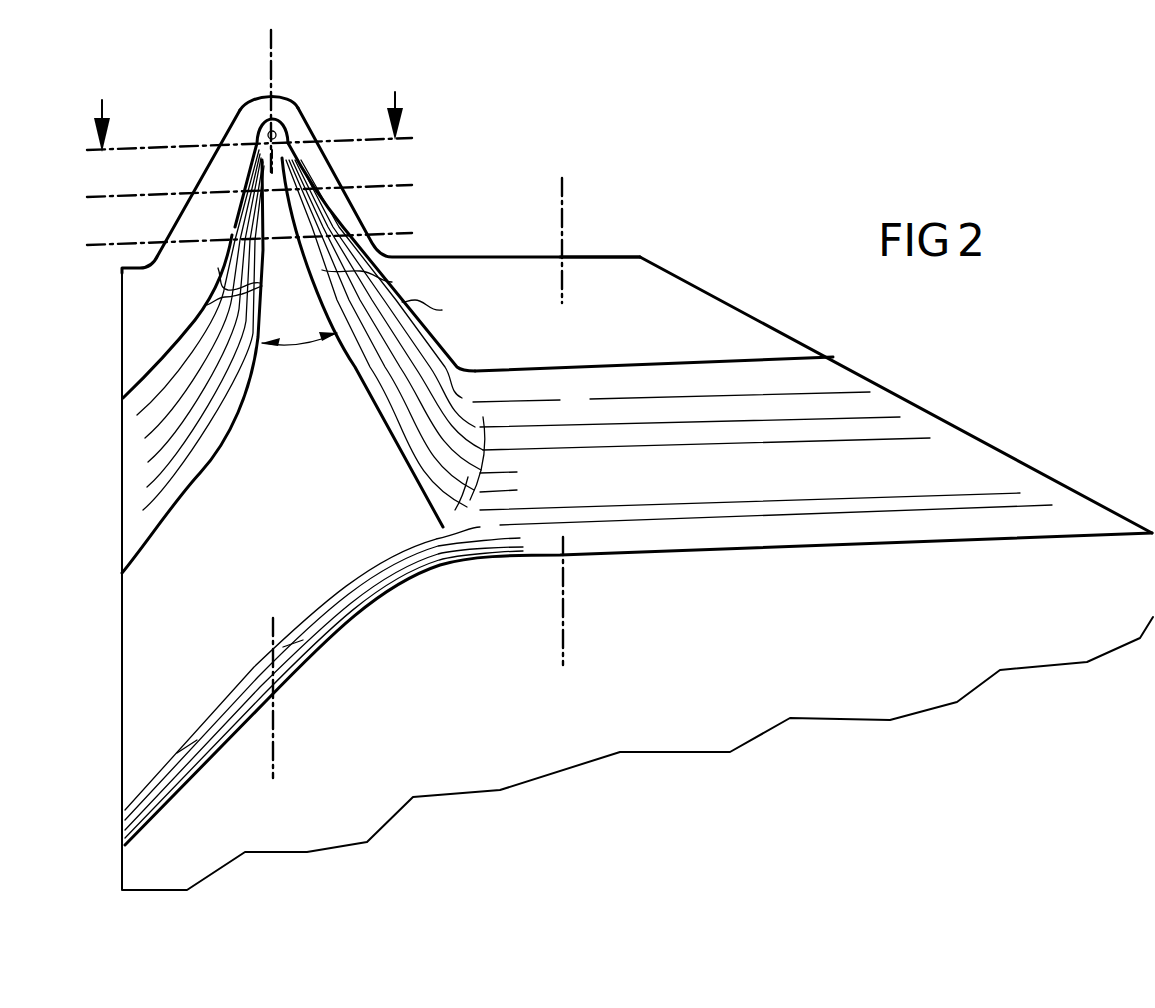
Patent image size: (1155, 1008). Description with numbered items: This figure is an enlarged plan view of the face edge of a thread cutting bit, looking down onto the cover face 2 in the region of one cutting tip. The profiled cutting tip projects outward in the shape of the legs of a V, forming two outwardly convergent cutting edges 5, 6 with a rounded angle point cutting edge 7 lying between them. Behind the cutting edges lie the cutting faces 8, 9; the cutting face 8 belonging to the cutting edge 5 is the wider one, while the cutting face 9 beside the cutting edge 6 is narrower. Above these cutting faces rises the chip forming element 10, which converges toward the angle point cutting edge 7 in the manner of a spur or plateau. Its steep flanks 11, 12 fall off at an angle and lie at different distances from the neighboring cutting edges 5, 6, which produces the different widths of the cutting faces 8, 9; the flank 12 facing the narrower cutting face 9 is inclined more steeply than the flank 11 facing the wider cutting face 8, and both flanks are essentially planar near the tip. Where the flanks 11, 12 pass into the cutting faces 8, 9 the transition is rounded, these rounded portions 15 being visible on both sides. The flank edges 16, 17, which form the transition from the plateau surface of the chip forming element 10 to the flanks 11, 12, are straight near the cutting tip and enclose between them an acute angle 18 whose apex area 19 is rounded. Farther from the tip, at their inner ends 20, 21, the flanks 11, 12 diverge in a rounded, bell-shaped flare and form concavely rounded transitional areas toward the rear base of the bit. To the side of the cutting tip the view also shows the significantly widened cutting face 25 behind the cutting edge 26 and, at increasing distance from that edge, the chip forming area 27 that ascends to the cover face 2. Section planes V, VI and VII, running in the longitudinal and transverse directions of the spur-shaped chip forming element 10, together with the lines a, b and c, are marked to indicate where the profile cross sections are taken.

The cover face 2 is at (733, 655).
The cutting edge 5 is at (241, 107).
The cutting edge 6 is at (317, 130).
The angle point cutting edge 7 is at (277, 93).
The cutting face 8 is at (203, 227).
The cutting face 9 is at (333, 177).
The chip forming element 10 is at (282, 310).
The flank 11 is at (212, 367).
The flank 12 is at (382, 356).
The rounded portions 15 is at (218, 268).
The flank edge 16 is at (207, 305).
The flank edge 17 is at (392, 282).
The acute angle 18 is at (300, 345).
The apex area 19 is at (260, 122).
The inner end 20 is at (237, 428).
The inner end 21 is at (390, 468).
The cutting face 25 is at (608, 319).
The cutting edge 26 is at (617, 250).
The chip forming area 27 is at (651, 435).
The section plane a is at (155, 148).
The section plane b is at (97, 194).
The section plane c is at (97, 243).
The section V is at (300, 47).
The section VI is at (590, 194).
The section VII is at (119, 95).